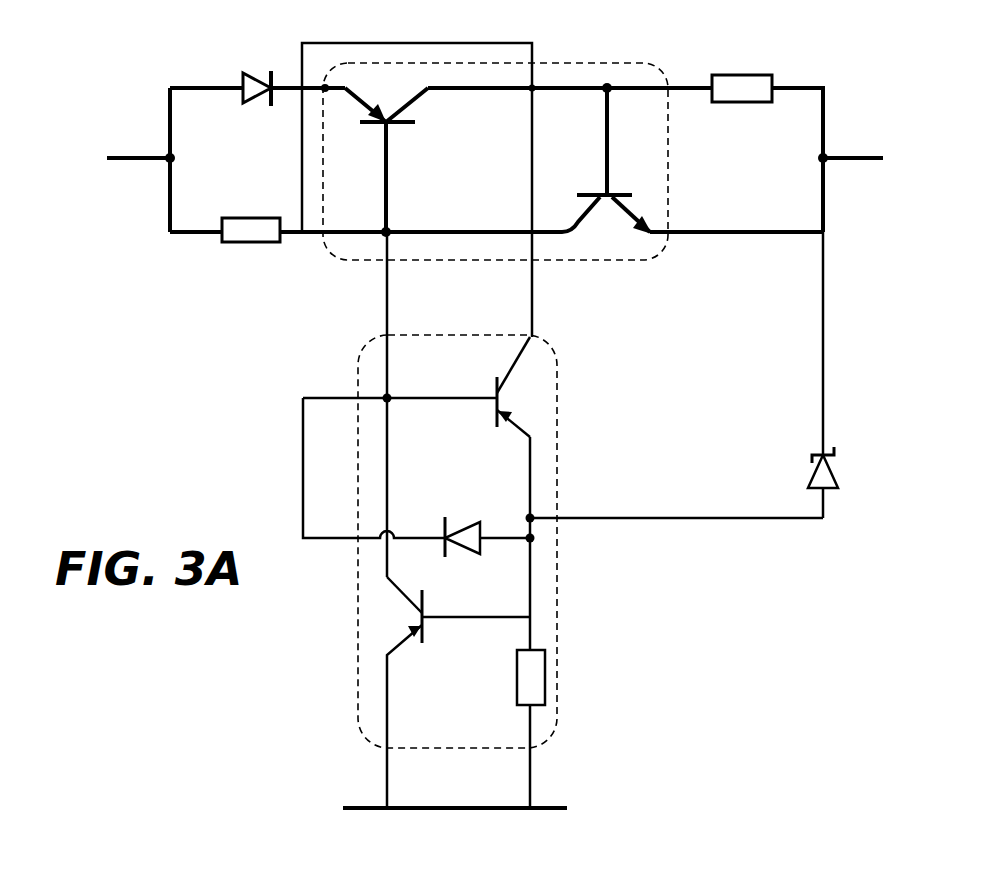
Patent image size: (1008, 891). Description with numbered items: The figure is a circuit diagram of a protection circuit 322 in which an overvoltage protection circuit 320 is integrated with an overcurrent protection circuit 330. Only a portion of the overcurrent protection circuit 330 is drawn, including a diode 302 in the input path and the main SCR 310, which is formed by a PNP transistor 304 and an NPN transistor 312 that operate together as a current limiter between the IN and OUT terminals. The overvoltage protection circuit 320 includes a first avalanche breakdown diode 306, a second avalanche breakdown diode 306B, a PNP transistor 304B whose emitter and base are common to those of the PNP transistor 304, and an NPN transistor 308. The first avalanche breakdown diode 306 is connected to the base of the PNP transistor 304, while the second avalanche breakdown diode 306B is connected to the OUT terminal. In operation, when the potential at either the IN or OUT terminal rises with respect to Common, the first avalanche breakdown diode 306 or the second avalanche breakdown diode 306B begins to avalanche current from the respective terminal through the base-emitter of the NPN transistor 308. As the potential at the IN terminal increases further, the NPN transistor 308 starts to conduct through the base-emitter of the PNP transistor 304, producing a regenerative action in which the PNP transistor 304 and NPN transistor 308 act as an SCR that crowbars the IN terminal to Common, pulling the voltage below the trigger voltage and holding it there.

The overcurrent protection circuit 330 is at (152, 35).
The diode 302 is at (262, 73).
The PNP transistor 304 is at (373, 128).
The main SCR 310 is at (596, 262).
The NPN transistor 312 is at (630, 195).
The overvoltage protection circuit 320 is at (258, 660).
The PNP transistor 304B is at (494, 393).
The first avalanche breakdown diode 306 is at (440, 536).
The NPN transistor 308 is at (418, 634).
The second avalanche breakdown diode 306B is at (819, 486).
The protection circuit 322 is at (792, 739).